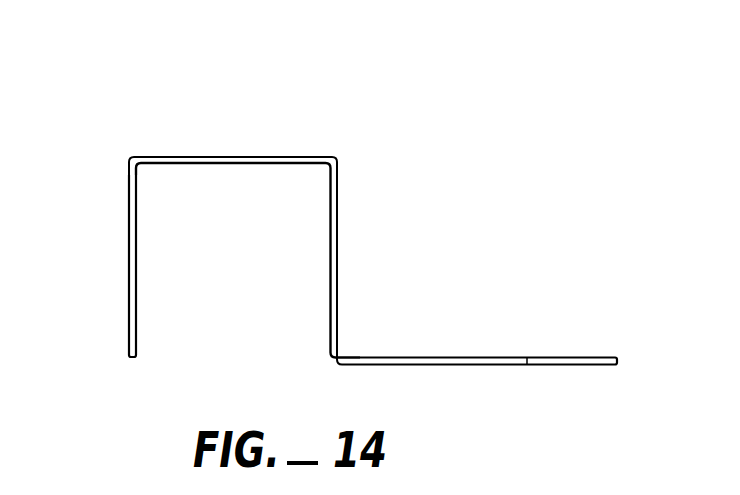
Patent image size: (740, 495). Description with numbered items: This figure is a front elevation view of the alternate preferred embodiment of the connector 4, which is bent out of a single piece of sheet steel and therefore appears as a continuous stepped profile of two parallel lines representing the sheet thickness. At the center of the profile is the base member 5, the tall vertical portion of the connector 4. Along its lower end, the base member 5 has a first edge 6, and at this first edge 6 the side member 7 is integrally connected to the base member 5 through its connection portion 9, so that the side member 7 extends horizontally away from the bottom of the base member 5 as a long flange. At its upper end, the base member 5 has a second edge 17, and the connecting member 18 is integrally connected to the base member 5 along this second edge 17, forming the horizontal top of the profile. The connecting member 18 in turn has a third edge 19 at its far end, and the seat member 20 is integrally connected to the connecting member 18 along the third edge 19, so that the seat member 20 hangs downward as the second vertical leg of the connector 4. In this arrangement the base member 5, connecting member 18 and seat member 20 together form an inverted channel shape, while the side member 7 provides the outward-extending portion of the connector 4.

The connector 4 is at (340, 269).
The base member 5 is at (328, 272).
The first edge 6 is at (338, 355).
The side member 7 is at (465, 366).
The connection portion 9 is at (495, 357).
The second edge 17 is at (337, 160).
The connecting member 18 is at (215, 157).
The third edge 19 is at (126, 160).
The seat member 20 is at (128, 275).